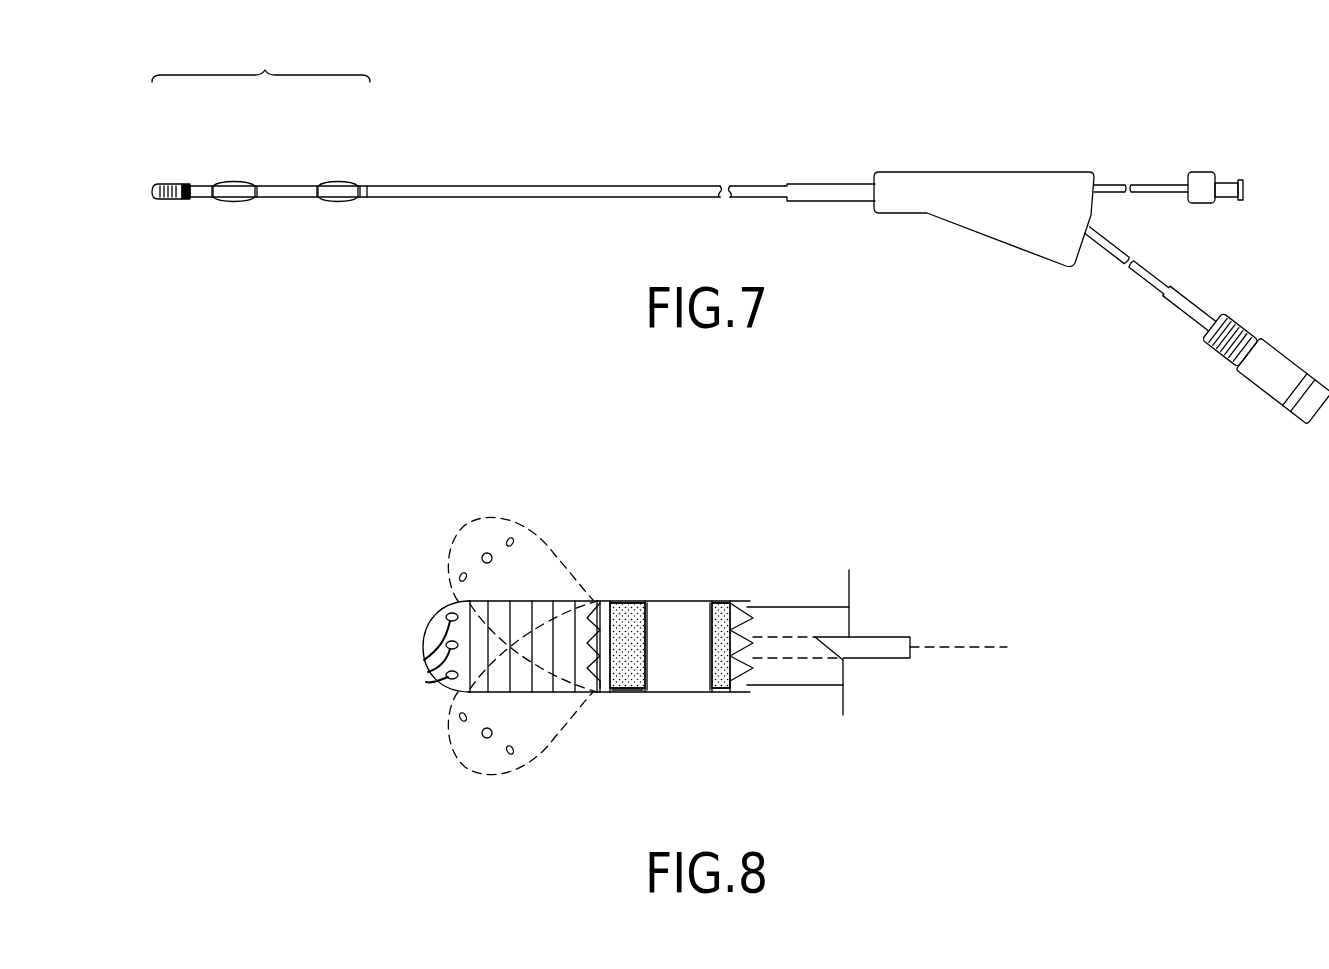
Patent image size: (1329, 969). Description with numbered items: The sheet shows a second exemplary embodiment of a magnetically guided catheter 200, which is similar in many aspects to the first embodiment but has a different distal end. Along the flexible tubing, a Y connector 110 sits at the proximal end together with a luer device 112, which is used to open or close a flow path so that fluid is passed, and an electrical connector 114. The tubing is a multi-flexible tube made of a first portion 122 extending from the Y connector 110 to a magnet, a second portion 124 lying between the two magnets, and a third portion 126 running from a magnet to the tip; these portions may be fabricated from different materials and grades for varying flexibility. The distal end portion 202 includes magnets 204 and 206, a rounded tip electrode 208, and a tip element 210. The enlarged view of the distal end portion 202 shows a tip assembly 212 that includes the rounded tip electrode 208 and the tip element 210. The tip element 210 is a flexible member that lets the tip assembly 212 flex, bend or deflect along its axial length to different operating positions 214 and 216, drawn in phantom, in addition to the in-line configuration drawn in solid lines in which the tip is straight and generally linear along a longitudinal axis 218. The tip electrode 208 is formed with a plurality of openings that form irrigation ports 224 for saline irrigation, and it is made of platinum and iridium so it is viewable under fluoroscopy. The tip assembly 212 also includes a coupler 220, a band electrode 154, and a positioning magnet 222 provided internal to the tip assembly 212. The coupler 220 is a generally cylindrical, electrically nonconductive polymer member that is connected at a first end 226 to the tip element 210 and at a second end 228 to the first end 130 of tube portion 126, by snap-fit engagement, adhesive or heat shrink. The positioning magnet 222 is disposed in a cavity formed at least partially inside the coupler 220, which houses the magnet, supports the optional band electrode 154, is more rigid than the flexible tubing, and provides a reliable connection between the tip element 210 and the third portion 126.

In FIG. 7, the magnetically guided catheter 200 is at (635, 125).
In FIG. 7, the distal end portion 202 is at (261, 59).
In FIG. 8, the distal end portion 202 is at (626, 475).
In FIG. 7, the magnet 204 is at (233, 183).
In FIG. 7, the magnet 206 is at (340, 222).
In FIG. 7, the rounded tip electrode 208 is at (152, 192).
In FIG. 8, the rounded tip electrode 208 is at (412, 641).
In FIG. 7, the tip element 210 is at (160, 170).
In FIG. 8, the tip element 210 is at (521, 600).
In FIG. 7, the first portion of tubing 122 is at (470, 186).
In FIG. 7, the second portion of tubing 124 is at (290, 186).
In FIG. 7, the third portion of tubing 126 is at (200, 186).
In FIG. 8, the third portion of tubing 126 is at (830, 607).
In FIG. 7, the Y connector 110 is at (937, 180).
In FIG. 7, the luer device 112 is at (1226, 184).
In FIG. 7, the electrical connector 114 is at (1243, 362).
In FIG. 8, the operating position 214 is at (463, 533).
In FIG. 8, the operating position 216 is at (473, 768).
In FIG. 8, the irrigation ports 224 is at (428, 684).
In FIG. 8, the tip assembly 212 is at (578, 740).
In FIG. 8, the coupler 220 is at (635, 613).
In FIG. 8, the first end of coupler 226 is at (618, 693).
In FIG. 8, the band electrode 154 is at (699, 583).
In FIG. 8, the positioning magnet 222 is at (720, 687).
In FIG. 8, the second end of coupler 228 is at (733, 690).
In FIG. 8, the first end of tube portion 130 is at (744, 607).
In FIG. 8, the longitudinal axis 218 is at (960, 645).